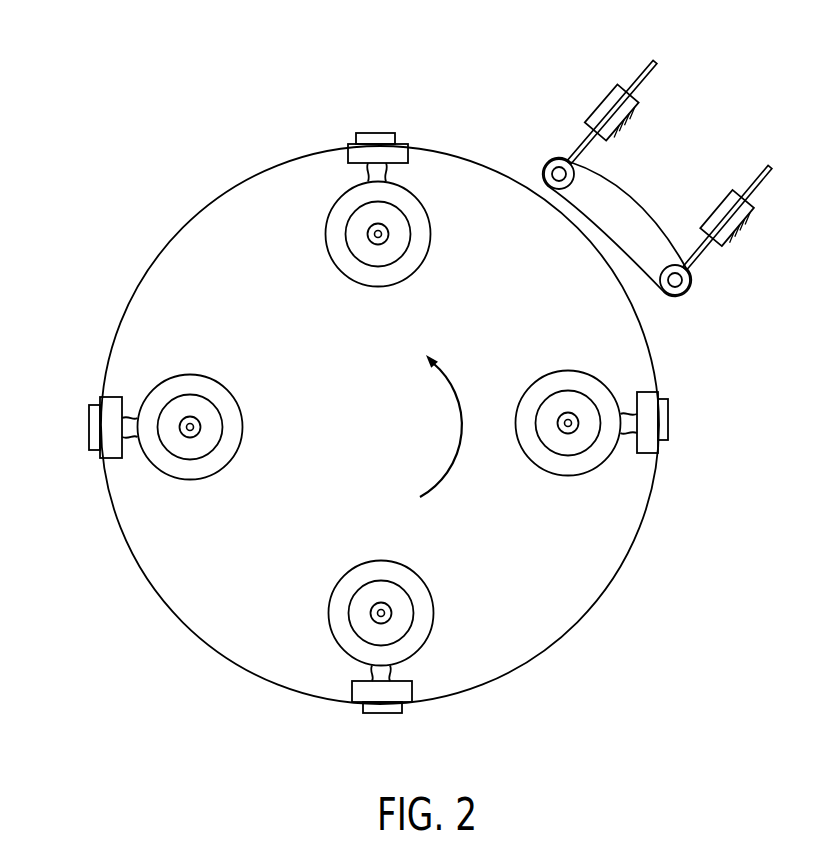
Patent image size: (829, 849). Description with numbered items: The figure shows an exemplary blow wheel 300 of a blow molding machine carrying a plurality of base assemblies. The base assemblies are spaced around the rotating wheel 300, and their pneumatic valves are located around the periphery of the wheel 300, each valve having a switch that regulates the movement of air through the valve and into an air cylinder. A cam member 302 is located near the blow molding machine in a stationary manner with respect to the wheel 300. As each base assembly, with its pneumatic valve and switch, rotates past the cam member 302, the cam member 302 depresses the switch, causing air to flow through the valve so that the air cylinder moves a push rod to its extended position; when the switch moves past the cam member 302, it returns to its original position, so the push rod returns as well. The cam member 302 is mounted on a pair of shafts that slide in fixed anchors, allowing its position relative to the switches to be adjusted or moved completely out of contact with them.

The blow wheel 300 is at (592, 592).
The cam member 302 is at (638, 202).